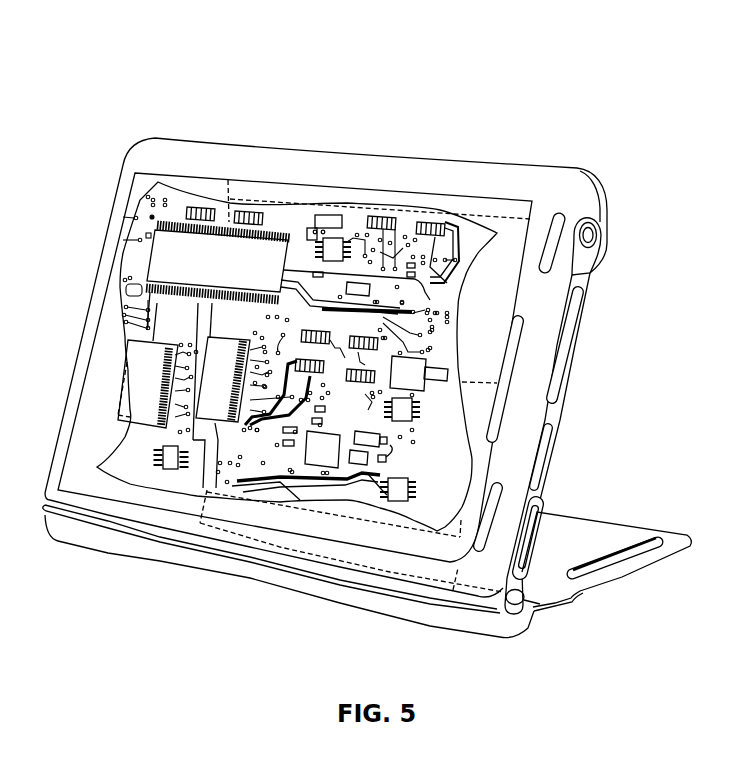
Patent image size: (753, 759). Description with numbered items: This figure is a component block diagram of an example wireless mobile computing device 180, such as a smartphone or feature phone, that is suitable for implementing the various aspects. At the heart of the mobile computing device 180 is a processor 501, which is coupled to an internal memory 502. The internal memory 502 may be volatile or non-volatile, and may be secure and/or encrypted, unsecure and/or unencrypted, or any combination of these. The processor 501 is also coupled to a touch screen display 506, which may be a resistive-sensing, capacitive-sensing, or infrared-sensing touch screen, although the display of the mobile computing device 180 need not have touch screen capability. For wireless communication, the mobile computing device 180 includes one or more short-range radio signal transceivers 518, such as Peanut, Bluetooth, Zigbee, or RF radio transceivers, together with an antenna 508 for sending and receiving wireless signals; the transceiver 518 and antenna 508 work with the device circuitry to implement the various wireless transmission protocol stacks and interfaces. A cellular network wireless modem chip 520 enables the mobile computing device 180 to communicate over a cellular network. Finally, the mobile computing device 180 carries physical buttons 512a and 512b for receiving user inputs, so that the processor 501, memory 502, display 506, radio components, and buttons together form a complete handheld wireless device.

The mobile computing device 180 is at (300, 97).
The processor 501 is at (232, 267).
The internal memory 502 is at (164, 365).
The touch screen display 506 is at (424, 192).
The antenna 508 is at (519, 606).
The physical button 512a is at (555, 249).
The physical button 512b is at (500, 505).
The short-range radio signal transceiver 518 is at (345, 240).
The cellular network wireless modem chip 520 is at (421, 395).